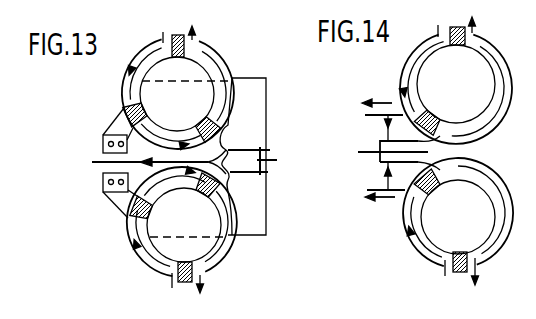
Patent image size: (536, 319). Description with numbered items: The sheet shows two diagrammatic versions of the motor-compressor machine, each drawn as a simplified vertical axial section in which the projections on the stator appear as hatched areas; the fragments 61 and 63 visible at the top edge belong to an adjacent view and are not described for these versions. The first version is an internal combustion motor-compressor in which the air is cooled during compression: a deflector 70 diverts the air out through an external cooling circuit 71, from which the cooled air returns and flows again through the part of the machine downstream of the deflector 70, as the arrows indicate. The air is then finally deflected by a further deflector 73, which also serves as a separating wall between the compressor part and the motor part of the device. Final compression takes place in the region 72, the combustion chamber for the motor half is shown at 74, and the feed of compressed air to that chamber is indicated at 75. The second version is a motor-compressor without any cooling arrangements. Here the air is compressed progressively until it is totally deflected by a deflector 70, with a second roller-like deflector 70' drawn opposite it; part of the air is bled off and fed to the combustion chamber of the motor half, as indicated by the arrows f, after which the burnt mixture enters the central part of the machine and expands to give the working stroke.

In FIG. 13, the element (cut off from adjacent sheet) 61 is at (127, 9).
In FIG. 13, the element (cut off from adjacent sheet) 63 is at (228, 7).
In FIG. 13, the deflector 70 is at (186, 94).
In FIG. 14, the deflector 70 is at (454, 90).
In FIG. 14, the lower feed roller 70' is at (454, 211).
In FIG. 13, the external cooling circuit 71 is at (92, 163).
In FIG. 13, the final compression region 72 is at (198, 143).
In FIG. 13, the deflector 73 is at (204, 122).
In FIG. 13, the combustion chamber 74 is at (248, 147).
In FIG. 13, the feed of compressed air 75 is at (244, 78).
In FIG. 14, the arrows f is at (388, 133).